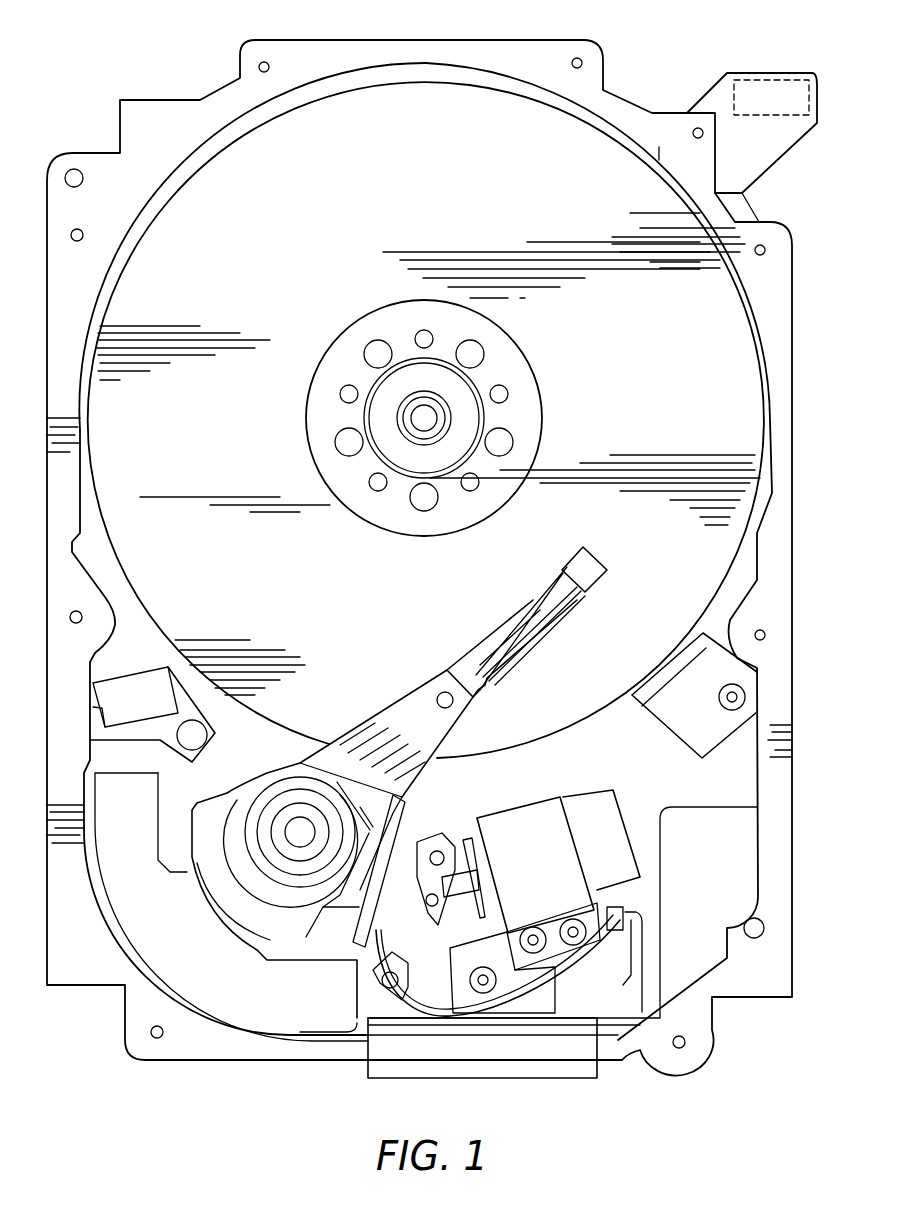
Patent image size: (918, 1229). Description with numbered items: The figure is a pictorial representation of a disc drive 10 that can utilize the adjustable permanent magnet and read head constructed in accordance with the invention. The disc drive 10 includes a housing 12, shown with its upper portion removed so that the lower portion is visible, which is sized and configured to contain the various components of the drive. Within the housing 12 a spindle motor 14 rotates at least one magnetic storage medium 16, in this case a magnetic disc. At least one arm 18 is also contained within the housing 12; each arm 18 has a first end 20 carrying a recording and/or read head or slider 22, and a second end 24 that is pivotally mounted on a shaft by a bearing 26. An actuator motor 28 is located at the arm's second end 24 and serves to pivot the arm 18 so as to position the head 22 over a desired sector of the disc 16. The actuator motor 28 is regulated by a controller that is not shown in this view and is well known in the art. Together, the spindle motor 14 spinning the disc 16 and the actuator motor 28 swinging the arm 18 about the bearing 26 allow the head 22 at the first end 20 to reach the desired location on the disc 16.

The disc drive 10 is at (101, 91).
The housing 12 is at (556, 53).
The spindle motor 14 is at (419, 423).
The magnetic storage medium 16 is at (338, 214).
The arm 18 is at (412, 713).
The first end 20 is at (528, 600).
The head or slider 22 is at (583, 570).
The second end 24 is at (321, 773).
The bearing 26 is at (287, 827).
The actuator motor 28 is at (191, 957).